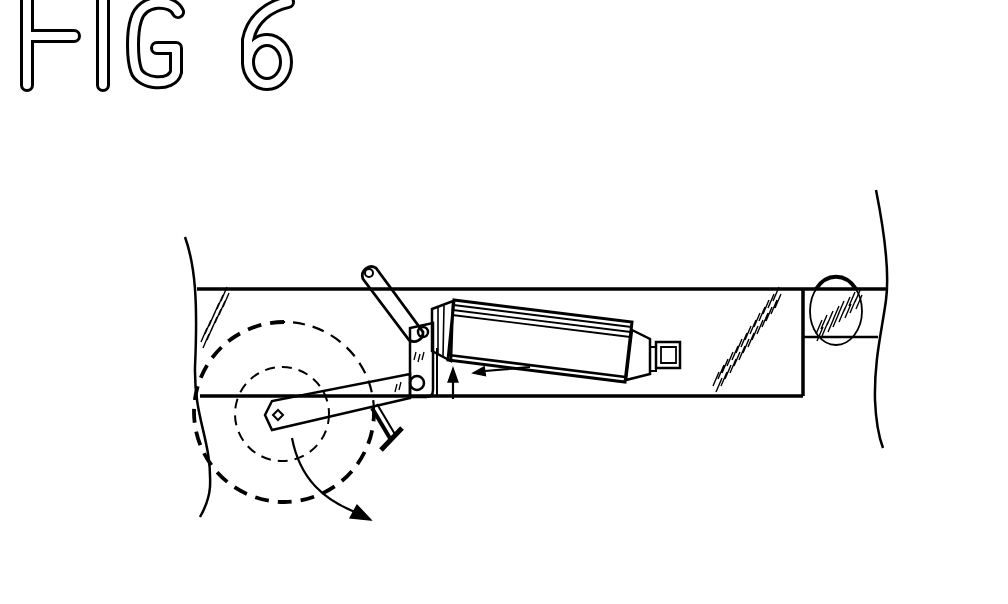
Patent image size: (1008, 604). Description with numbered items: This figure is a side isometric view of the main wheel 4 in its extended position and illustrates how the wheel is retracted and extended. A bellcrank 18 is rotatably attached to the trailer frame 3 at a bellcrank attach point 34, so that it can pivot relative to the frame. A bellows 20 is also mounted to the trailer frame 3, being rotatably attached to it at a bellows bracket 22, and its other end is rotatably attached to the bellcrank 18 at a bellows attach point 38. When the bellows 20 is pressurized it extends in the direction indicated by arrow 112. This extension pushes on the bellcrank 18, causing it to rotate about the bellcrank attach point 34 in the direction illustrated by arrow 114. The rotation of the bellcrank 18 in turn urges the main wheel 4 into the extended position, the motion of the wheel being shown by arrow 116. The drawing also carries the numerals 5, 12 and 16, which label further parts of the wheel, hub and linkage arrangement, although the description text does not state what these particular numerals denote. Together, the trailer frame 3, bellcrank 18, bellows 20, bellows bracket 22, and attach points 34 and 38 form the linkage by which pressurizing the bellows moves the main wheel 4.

The trailer frame 3 is at (610, 289).
The main wheel 4 is at (212, 472).
The lever arm 5 is at (394, 445).
The hub 12 is at (821, 277).
The pivot pin 16 is at (383, 266).
The bellcrank 18 is at (385, 281).
The bellows 20 is at (510, 303).
The bellows bracket 22 is at (667, 340).
The bellcrank attach point 34 is at (408, 401).
The bellows attach point 38 is at (401, 343).
The arrow 112 is at (520, 380).
The arrow 114 is at (432, 422).
The arrow 116 is at (337, 505).